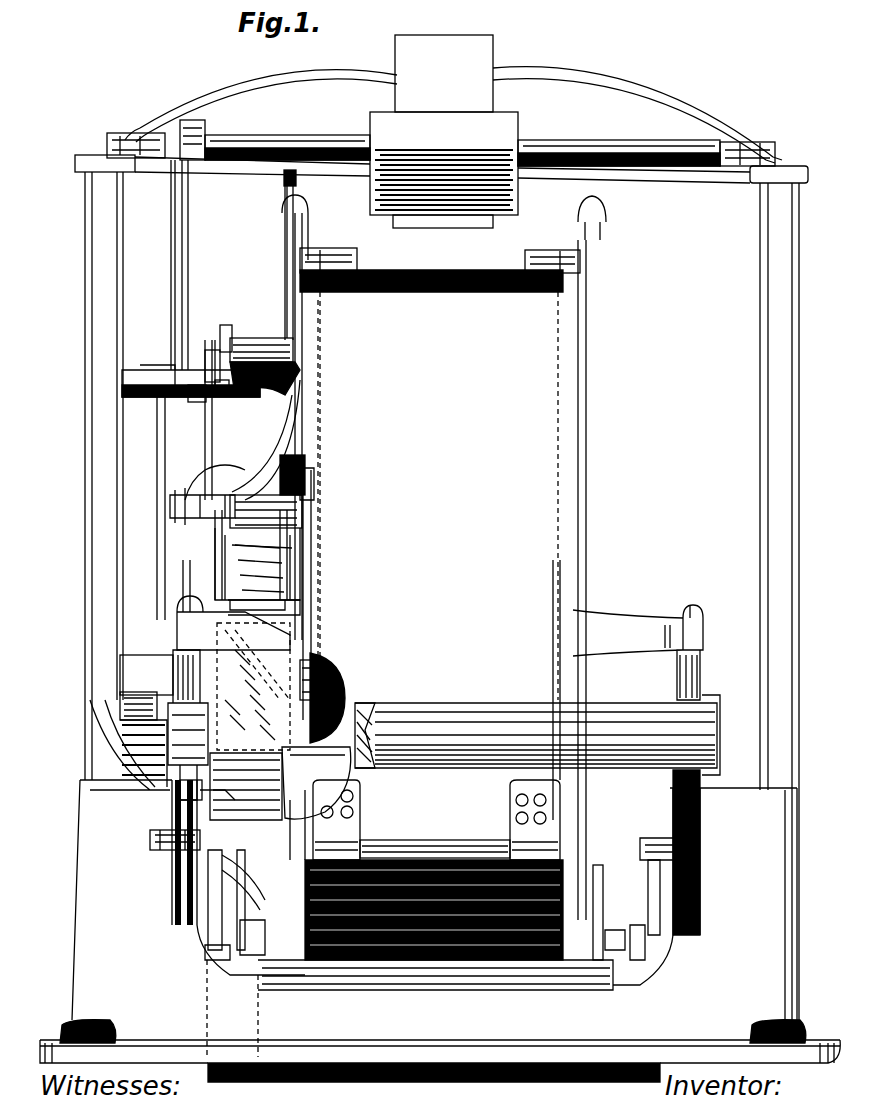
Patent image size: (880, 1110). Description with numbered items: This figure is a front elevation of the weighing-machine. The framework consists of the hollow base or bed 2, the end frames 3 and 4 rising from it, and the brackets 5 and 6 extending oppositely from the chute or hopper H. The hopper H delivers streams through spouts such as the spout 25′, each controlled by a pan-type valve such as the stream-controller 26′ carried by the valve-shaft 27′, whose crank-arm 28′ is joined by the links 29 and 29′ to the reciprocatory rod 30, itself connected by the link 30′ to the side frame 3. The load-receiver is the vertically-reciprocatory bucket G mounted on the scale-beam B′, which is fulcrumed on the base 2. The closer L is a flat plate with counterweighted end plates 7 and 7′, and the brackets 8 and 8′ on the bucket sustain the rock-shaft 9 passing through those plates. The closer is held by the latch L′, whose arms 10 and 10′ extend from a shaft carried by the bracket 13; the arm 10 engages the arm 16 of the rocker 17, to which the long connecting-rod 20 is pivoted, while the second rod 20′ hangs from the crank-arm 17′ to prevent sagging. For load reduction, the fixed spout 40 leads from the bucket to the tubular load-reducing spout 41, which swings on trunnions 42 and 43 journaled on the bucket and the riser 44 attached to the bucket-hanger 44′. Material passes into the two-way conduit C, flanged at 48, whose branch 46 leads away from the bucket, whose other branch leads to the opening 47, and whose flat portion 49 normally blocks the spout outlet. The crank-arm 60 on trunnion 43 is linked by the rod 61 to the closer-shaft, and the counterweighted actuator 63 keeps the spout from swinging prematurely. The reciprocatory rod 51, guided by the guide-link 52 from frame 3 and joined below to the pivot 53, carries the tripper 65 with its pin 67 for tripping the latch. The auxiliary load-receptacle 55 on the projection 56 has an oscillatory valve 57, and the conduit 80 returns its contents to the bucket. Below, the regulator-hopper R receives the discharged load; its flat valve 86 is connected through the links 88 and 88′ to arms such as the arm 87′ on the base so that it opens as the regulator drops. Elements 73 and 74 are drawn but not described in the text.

The hollow base or bed 2 is at (440, 931).
The end frame 3 is at (86, 300).
The end frame 4 is at (796, 385).
The bracket 5 is at (256, 82).
The bracket 6 is at (600, 78).
The chute or hopper H is at (444, 73).
The stream-controller or valve 26′ is at (444, 163).
The spout 25′ is at (444, 223).
The valve-shaft 27′ is at (326, 140).
The crank-arm 28′ is at (203, 130).
The link 29 is at (170, 196).
The link 29′ is at (189, 190).
The rocker or open segment 17 is at (285, 225).
The long connecting-rod 20 is at (303, 228).
The crank-arm 17′ is at (601, 236).
The second rod 20′ is at (588, 366).
The bucket G is at (440, 514).
The latch-arm 10′ is at (226, 325).
The latch L′ is at (250, 309).
The arm 16 is at (292, 316).
The latch-arm 10 is at (292, 342).
The bracket 13 is at (285, 375).
The pin 67 is at (208, 355).
The link 30′ is at (146, 370).
The tripper 65 is at (229, 387).
The guide-link 52 is at (190, 398).
The reciprocatory rod 51 is at (206, 428).
The reciprocatory rod 30 is at (158, 442).
The fixed spout 40 is at (268, 432).
The trunnion 42 is at (208, 495).
The trunnion 43 is at (275, 505).
The counterweighted actuator 63 is at (293, 455).
The crank-arm 60 is at (306, 470).
The rod or link 61 is at (312, 540).
The two-way conduit C is at (256, 569).
The tubular load-reducing spout 41 is at (238, 546).
The flange 48 is at (218, 572).
The riser or upright 44 is at (184, 570).
The flat portion 49 is at (272, 606).
The branch 46 is at (288, 636).
The bucket-hanger 44′ is at (178, 623).
The bracket 73 is at (307, 660).
The plate 74 is at (262, 700).
The opening 47 is at (318, 690).
The auxiliary load-receptacle 55 is at (175, 700).
The projection 56 is at (130, 668).
The projecting pivot 53 is at (112, 704).
The counterweighted end plate 7 is at (323, 775).
The oscillatory valve 57 is at (183, 788).
The conduit 80 is at (215, 793).
The arm 87′ is at (160, 838).
The link 88 is at (220, 920).
The scale-beam B′ is at (537, 735).
The counterweighted end plate 7′ is at (590, 810).
The closer L is at (430, 940).
The rock-shaft 9 is at (437, 840).
The bracket 8 is at (352, 842).
The bracket 8′ is at (512, 836).
The regulator-hopper R is at (603, 878).
The link 88′ is at (649, 905).
The flat valve 86 is at (412, 1075).